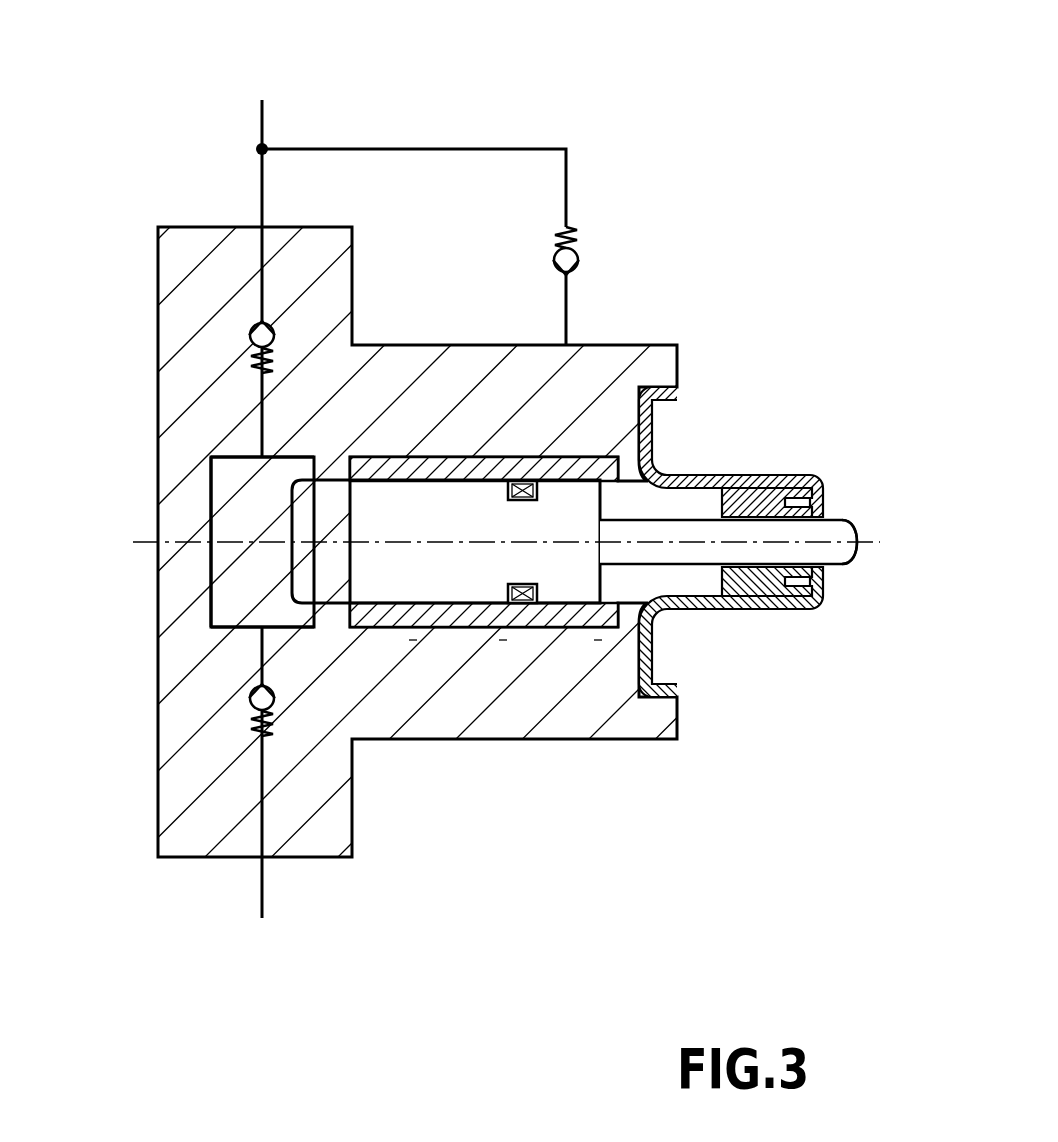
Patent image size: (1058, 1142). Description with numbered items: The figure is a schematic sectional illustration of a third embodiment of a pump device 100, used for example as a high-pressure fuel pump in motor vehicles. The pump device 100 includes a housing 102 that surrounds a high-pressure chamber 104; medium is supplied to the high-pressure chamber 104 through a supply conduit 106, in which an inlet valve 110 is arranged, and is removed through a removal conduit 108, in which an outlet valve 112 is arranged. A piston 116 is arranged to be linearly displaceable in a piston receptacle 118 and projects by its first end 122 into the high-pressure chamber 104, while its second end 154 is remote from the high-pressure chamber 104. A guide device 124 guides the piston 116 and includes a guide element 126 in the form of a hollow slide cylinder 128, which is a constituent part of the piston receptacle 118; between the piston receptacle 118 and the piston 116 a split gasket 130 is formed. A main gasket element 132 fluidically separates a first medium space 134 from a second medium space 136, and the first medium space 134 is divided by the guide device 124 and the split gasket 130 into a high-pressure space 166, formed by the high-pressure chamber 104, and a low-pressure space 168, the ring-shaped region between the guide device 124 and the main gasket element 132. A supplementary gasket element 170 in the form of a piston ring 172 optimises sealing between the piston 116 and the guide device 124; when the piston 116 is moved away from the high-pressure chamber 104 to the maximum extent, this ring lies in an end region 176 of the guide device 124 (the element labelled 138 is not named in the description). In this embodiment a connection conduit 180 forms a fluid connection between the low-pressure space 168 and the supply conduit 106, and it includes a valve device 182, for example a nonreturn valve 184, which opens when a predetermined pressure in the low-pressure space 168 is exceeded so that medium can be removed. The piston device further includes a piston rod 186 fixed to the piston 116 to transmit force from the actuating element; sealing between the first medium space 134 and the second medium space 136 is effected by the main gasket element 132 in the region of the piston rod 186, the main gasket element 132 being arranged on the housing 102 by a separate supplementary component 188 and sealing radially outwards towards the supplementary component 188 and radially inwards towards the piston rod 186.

The pump device 100 is at (640, 122).
The housing 102 is at (192, 655).
The high-pressure chamber 104 is at (250, 495).
The supply conduit 106 is at (262, 123).
The removal conduit 108 is at (262, 893).
The inlet valve 110 is at (247, 330).
The outlet valve 112 is at (250, 690).
The piston 116 is at (437, 617).
The piston receptacle 118 is at (413, 630).
The first end 122 is at (292, 553).
The guide device 124 is at (503, 630).
The guide element 126 is at (468, 617).
The hollow slide cylinder 128 is at (363, 466).
The split gasket 130 is at (433, 476).
The main gasket element 132 is at (772, 613).
The first medium space 134 is at (250, 480).
The second medium space 136 is at (896, 593).
The lower guide bushing 138 is at (355, 627).
The second end 154 is at (863, 538).
The high-pressure space 166 is at (250, 512).
The low-pressure space 168 is at (650, 507).
The supplementary gasket element 170 is at (528, 481).
The piston ring 172 is at (521, 605).
The end region 176 is at (598, 630).
The connection conduit 180 is at (367, 149).
The valve device 182 is at (578, 270).
The nonreturn valve 184 is at (567, 255).
The piston rod 186 is at (833, 557).
The supplementary component 188 is at (760, 473).